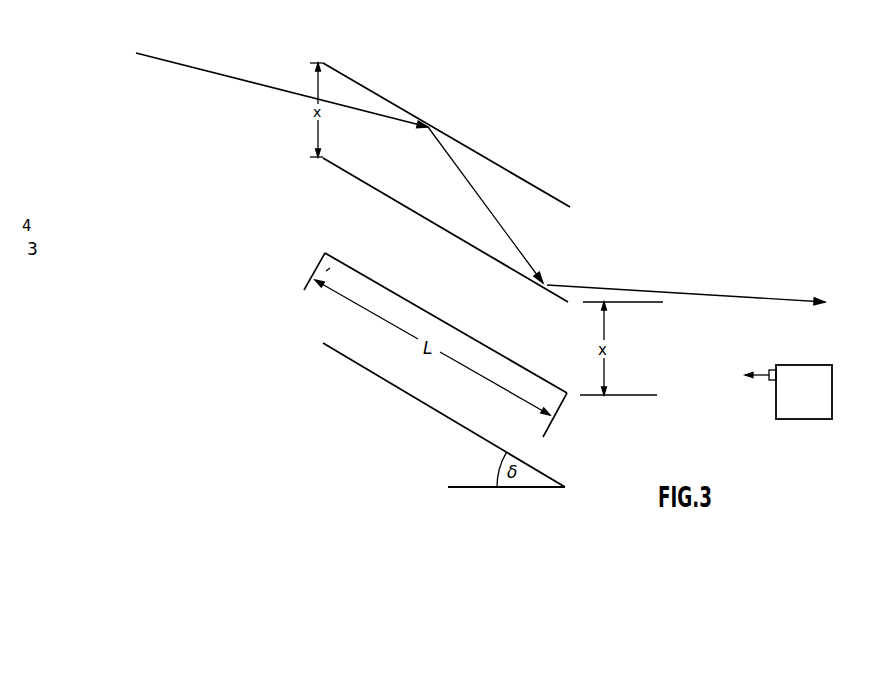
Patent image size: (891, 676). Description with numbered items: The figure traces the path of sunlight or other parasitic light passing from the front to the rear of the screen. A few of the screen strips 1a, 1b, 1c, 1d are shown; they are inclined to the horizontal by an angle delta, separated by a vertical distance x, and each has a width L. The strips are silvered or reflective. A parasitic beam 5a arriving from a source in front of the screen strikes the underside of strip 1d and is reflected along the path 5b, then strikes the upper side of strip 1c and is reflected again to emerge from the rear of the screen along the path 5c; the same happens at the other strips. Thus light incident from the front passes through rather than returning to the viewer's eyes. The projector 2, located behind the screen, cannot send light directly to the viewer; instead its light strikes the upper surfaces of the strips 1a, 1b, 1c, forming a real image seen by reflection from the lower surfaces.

The strip 1a is at (544, 474).
The strip 1b is at (530, 367).
The strip 1c is at (428, 219).
The strip 1d is at (480, 155).
The projector 2 is at (812, 386).
The parasitic beam 5a is at (205, 70).
The path 5b is at (503, 230).
The path 5c is at (707, 294).